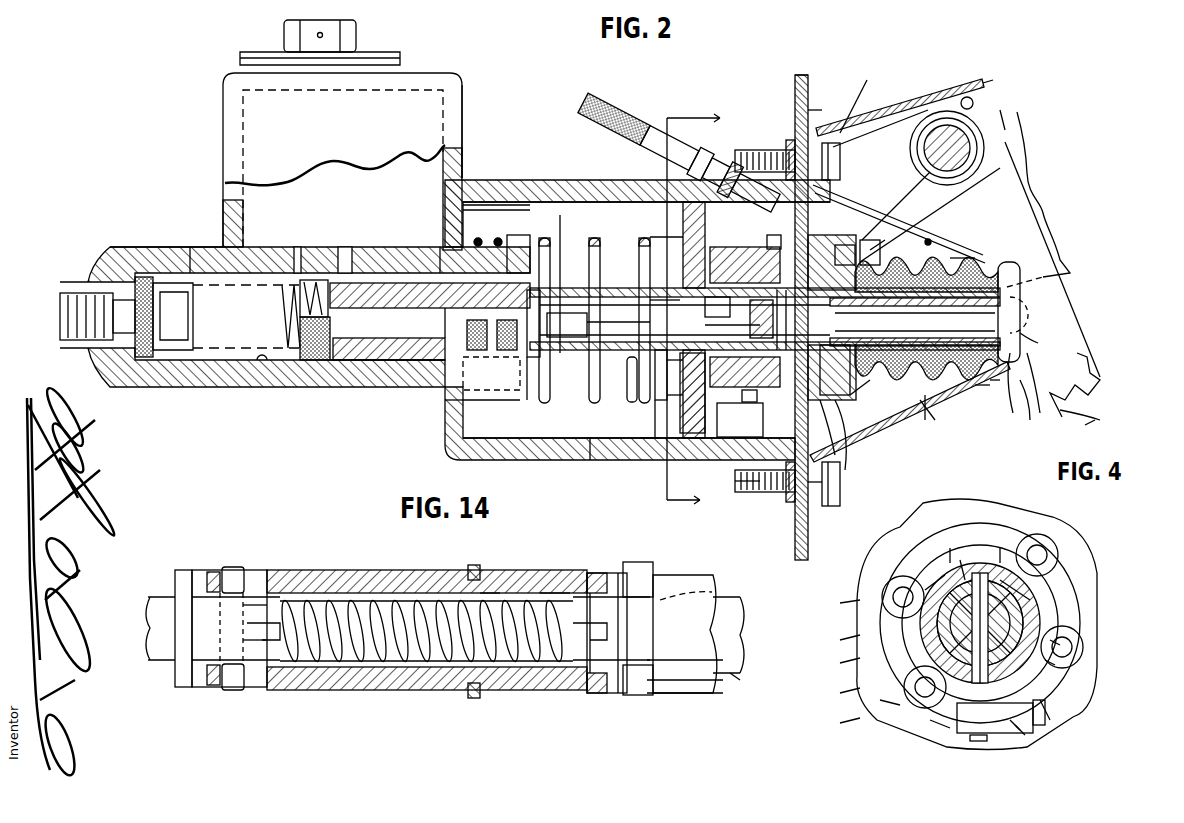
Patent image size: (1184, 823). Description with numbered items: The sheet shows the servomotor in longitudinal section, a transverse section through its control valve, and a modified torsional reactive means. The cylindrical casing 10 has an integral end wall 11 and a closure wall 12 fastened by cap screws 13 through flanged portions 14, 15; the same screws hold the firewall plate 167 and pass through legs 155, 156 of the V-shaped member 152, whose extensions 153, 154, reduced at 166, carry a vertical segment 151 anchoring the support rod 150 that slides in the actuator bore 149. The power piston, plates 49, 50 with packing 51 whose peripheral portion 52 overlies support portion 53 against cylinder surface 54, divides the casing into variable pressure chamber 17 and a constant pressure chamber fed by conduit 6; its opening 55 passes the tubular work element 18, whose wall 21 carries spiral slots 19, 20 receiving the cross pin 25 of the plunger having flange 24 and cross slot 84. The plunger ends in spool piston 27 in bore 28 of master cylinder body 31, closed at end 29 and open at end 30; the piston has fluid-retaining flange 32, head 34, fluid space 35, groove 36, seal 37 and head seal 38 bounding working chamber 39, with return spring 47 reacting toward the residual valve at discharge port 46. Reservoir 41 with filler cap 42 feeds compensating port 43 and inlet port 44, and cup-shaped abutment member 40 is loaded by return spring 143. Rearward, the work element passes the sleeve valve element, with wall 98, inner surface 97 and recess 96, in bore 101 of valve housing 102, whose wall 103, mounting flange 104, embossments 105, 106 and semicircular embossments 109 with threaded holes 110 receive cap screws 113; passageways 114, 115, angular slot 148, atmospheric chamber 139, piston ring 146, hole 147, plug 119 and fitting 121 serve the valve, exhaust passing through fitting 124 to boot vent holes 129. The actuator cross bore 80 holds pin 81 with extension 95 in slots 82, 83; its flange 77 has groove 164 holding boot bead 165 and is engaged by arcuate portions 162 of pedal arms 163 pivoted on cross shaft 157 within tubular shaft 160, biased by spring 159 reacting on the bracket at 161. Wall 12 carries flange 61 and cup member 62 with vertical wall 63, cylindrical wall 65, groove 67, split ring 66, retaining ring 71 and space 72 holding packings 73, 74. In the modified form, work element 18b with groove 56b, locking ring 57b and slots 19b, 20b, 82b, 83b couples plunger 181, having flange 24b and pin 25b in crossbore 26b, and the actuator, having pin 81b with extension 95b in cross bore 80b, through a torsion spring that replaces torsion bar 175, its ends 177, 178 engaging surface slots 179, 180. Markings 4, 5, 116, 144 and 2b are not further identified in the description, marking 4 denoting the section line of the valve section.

In FIG. 2, the reservoir cap 42 is at (283, 35).
In FIG. 2, the reservoir 41 is at (265, 200).
In FIG. 2, the master cylinder housing 31 is at (150, 255).
In FIG. 2, the port 43 is at (298, 246).
In FIG. 2, the port 44 is at (346, 246).
In FIG. 2, the adjusting nut 46 is at (70, 312).
In FIG. 2, the return spring 47 is at (283, 305).
In FIG. 2, the seal 29 is at (148, 360).
In FIG. 2, the cup 39 is at (200, 370).
In FIG. 2, the compensating port / shaft 28 is at (260, 368).
In FIG. 2, the seal 38 is at (308, 362).
In FIG. 2, the spring 34 is at (320, 365).
In FIG. 2, the bore 35 is at (380, 362).
In FIG. 2, the piston 27 is at (430, 341).
In FIG. 2, the piston end 36 is at (455, 325).
In FIG. 2, the port 37 is at (440, 258).
In FIG. 2, the passage 143 is at (460, 212).
In FIG. 2, the seal rings 32 is at (488, 227).
In FIG. 2, the gland 30 is at (528, 250).
In FIG. 2, the housing 10 is at (564, 172).
In FIG. 2, the housing bottom wall 11 is at (500, 445).
In FIG. 2, the housing end wall 17 is at (470, 418).
In FIG. 2, the section line / hose 6 is at (679, 153).
In FIG. 2, the seal assembly 24 is at (491, 355).
In FIG. 2, the seal seat 40 is at (480, 402).
In FIG. 2, the bolt 19 is at (560, 315).
In FIG. 2, the bolt 20 is at (590, 392).
In FIG. 2, the bolt 18 is at (636, 360).
In FIG. 4, the bolt 18 is at (1020, 630).
In FIG. 2, the strut 21 is at (645, 350).
In FIG. 2, the connector 25 is at (575, 312).
In FIG. 2, the rod 84 is at (600, 312).
In FIG. 2, the plate 105 is at (660, 230).
In FIG. 4, the plate 105 is at (1000, 546).
In FIG. 2, the center flange 53 is at (683, 222).
In FIG. 2, the passage 144 is at (672, 300).
In FIG. 2, the valve body 139 is at (723, 299).
In FIG. 2, the valve element 146 is at (755, 319).
In FIG. 2, the valve guide 148 is at (763, 320).
In FIG. 2, the block 114 is at (725, 244).
In FIG. 2, the chamber 4 is at (733, 235).
In FIG. 2, the chamber 5 is at (725, 256).
In FIG. 2, the passage 106 is at (718, 407).
In FIG. 4, the passage 106 is at (1020, 728).
In FIG. 2, the rib 113 is at (651, 375).
In FIG. 4, the rib 113 is at (842, 603).
In FIG. 2, the rib 55 is at (666, 378).
In FIG. 2, the rib 104 is at (684, 398).
In FIG. 4, the rib 104 is at (1062, 710).
In FIG. 2, the rib 51 is at (650, 402).
In FIG. 2, the bottom wall 54 is at (600, 440).
In FIG. 2, the bottom flange 49 is at (652, 445).
In FIG. 2, the flange 52 is at (695, 442).
In FIG. 2, the mounting plate 12 is at (795, 112).
In FIG. 2, the bolt 14 is at (770, 500).
In FIG. 2, the bolt 15 is at (812, 505).
In FIG. 2, the bolt head 13 is at (842, 150).
In FIG. 2, the bolt head 155 is at (812, 495).
In FIG. 2, the housing 50 is at (760, 486).
In FIG. 4, the housing 50 is at (1070, 690).
In FIG. 2, the arm 153 is at (848, 472).
In FIG. 2, the arm 65 is at (845, 452).
In FIG. 2, the plate edge 167 is at (820, 108).
In FIG. 2, the bracket leg 156 is at (862, 99).
In FIG. 2, the bracket 159 is at (925, 105).
In FIG. 2, the pivot pin 161 is at (978, 100).
In FIG. 2, the pivot bushing 160 is at (970, 140).
In FIG. 2, the pedal lever 157 is at (1008, 146).
In FIG. 2, the link 154 is at (945, 245).
In FIG. 2, the link 152 is at (920, 240).
In FIG. 2, the lever 124 is at (875, 225).
In FIG. 2, the pin 66 is at (892, 224).
In FIG. 2, the pin 72 is at (941, 238).
In FIG. 2, the bearing 61 is at (838, 245).
In FIG. 2, the retainer 62 is at (879, 246).
In FIG. 2, the boot 63 is at (926, 275).
In FIG. 2, the boot 74 is at (926, 362).
In FIG. 2, the clamp 129 is at (965, 262).
In FIG. 2, the axis 162 is at (1039, 272).
In FIG. 2, the push rod sleeve 71 is at (915, 315).
In FIG. 2, the push rod 73 is at (915, 330).
In FIG. 2, the end cap 149 is at (1012, 300).
In FIG. 2, the end cap 150 is at (1044, 333).
In FIG. 2, the block 115 is at (832, 373).
In FIG. 2, the block 116 is at (862, 395).
In FIG. 2, the actuating rod 67 is at (890, 420).
In FIG. 2, the pin 166 is at (925, 422).
In FIG. 2, the clip 164 is at (985, 392).
In FIG. 2, the clip 165 is at (1005, 387).
In FIG. 2, the ring 77 is at (1024, 393).
In FIG. 2, the socket 151 is at (1039, 412).
In FIG. 2, the pedal arm end 163 is at (1108, 425).
In FIG. 4, the ring 95 is at (980, 545).
In FIG. 4, the disc 82 is at (935, 575).
In FIG. 4, the bolt hole 101 is at (1044, 550).
In FIG. 4, the bolt hole 109 is at (1020, 565).
In FIG. 4, the bolt hole 96 is at (840, 603).
In FIG. 4, the bolt hole 80 is at (840, 640).
In FIG. 4, the rib 98 is at (840, 663).
In FIG. 4, the rib 103 is at (840, 693).
In FIG. 4, the rib 110 is at (840, 723).
In FIG. 4, the tab 83 is at (1080, 730).
In FIG. 4, the block 147 is at (995, 722).
In FIG. 4, the foot 121 is at (1022, 728).
In FIG. 4, the foot 119 is at (940, 730).
In FIG. 4, the lug 102 is at (945, 685).
In FIG. 4, the lug 81 is at (842, 723).
In FIG. 4, the rib 97 is at (842, 693).
In FIG. 14, the flange 24b is at (183, 568).
In FIG. 14, the hub 26b is at (180, 672).
In FIG. 14, the seal 25b is at (210, 690).
In FIG. 14, the nut 19b is at (246, 572).
In FIG. 14, the bore 181 is at (255, 600).
In FIG. 14, the cylinder 18b is at (375, 568).
In FIG. 14, the seal 57b is at (470, 566).
In FIG. 14, the wall 56b is at (492, 575).
In FIG. 14, the seal 82b is at (600, 574).
In FIG. 14, the block 178 is at (602, 692).
In FIG. 14, the rod 180 is at (620, 695).
In FIG. 14, the nut 95b is at (640, 562).
In FIG. 14, the nut 81b is at (640, 580).
In FIG. 14, the block 80b is at (665, 600).
In FIG. 14, the shaft 2b is at (700, 655).
In FIG. 14, the plate 83b is at (643, 695).
In FIG. 14, the spring 175 is at (390, 678).
In FIG. 14, the spring seat 177 is at (270, 642).
In FIG. 14, the spring seat 20b is at (278, 678).
In FIG. 14, the bore 179 is at (248, 692).